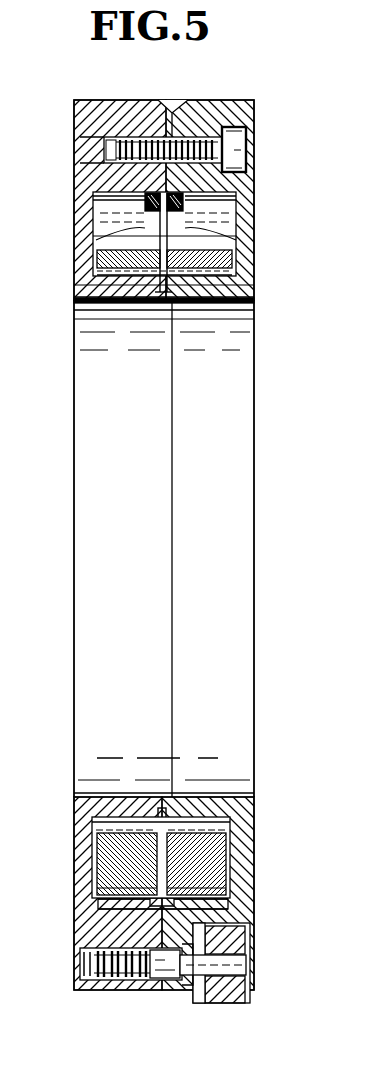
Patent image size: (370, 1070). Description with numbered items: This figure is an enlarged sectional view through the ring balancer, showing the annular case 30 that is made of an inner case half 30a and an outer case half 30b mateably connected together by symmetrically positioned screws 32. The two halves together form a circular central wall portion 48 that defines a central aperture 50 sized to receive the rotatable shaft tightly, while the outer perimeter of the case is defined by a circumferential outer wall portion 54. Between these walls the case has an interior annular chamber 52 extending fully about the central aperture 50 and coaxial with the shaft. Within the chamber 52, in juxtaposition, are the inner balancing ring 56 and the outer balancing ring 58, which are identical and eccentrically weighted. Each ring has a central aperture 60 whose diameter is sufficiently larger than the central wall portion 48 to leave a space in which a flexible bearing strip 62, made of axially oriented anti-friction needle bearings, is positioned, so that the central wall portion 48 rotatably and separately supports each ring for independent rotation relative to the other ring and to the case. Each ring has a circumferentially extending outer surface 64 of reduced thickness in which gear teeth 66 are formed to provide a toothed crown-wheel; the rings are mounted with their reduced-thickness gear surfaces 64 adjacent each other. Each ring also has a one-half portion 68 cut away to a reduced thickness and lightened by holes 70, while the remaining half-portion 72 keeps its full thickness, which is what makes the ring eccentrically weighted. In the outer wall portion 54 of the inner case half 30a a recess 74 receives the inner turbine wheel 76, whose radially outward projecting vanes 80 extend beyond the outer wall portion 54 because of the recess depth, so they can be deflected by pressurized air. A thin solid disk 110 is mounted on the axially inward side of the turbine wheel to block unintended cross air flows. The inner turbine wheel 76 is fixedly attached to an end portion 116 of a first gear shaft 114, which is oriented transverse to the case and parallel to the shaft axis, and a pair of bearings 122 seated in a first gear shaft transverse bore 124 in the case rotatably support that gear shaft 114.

The annular case 30 is at (258, 226).
The inner case half 30a is at (218, 110).
The outer case half 30b is at (112, 118).
The screws 32 is at (240, 141).
The central wall portion 48 is at (258, 303).
The central aperture 50 is at (226, 520).
The interior annular chamber 52 is at (262, 239).
The circumferential outer wall portion 54 is at (176, 106).
The inner balancing ring 56 is at (256, 281).
The outer balancing ring 58 is at (95, 280).
The central aperture 60 is at (150, 312).
The flexible bearing strips 62 is at (118, 312).
The outer surface 64 is at (145, 205).
The gear teeth 66 is at (226, 150).
The one-half portion 68 is at (140, 232).
The holes 70 is at (130, 259).
The remaining half-portion 72 is at (102, 850).
The recess 74 is at (208, 932).
The inner turbine wheel 76 is at (248, 1004).
The vanes 80 is at (225, 941).
The thin solid disk 110 is at (200, 987).
The first gear shaft 114 is at (120, 992).
The end portion 116 is at (248, 963).
The bearings 122 is at (85, 991).
The first gear shaft transverse bore 124 is at (100, 966).